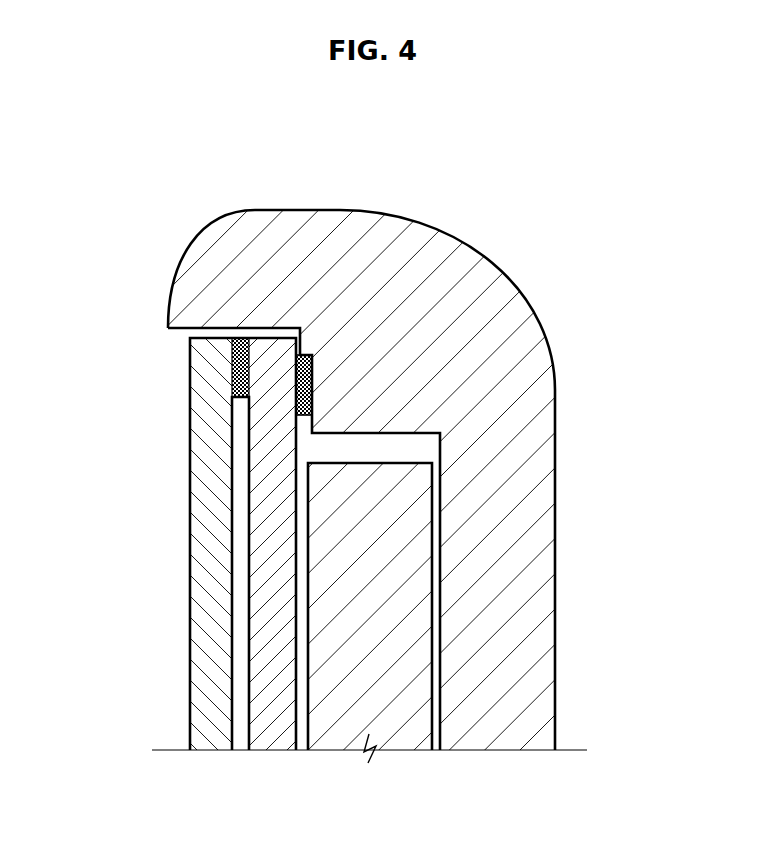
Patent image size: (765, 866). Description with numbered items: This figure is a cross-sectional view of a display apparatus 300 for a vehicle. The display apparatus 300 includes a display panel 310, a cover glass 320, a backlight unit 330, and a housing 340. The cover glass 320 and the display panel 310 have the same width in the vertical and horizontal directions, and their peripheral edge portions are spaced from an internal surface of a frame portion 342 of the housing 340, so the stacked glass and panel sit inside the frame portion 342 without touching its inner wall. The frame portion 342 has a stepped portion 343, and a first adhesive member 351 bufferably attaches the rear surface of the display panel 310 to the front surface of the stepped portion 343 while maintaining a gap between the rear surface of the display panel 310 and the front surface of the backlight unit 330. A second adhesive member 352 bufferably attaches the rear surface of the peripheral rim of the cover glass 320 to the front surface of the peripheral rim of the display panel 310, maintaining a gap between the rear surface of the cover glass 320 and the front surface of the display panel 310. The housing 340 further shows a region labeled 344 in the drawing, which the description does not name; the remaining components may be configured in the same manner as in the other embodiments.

The display apparatus 300 is at (375, 486).
The display panel 310 is at (258, 473).
The cover glass 320 is at (207, 544).
The backlight unit 330 is at (400, 733).
The housing 340 is at (427, 455).
The frame portion 342 is at (410, 455).
The stepped portion 343 is at (410, 480).
The side wall 344 is at (540, 540).
The first adhesive member 351 is at (305, 330).
The second adhesive member 352 is at (235, 361).